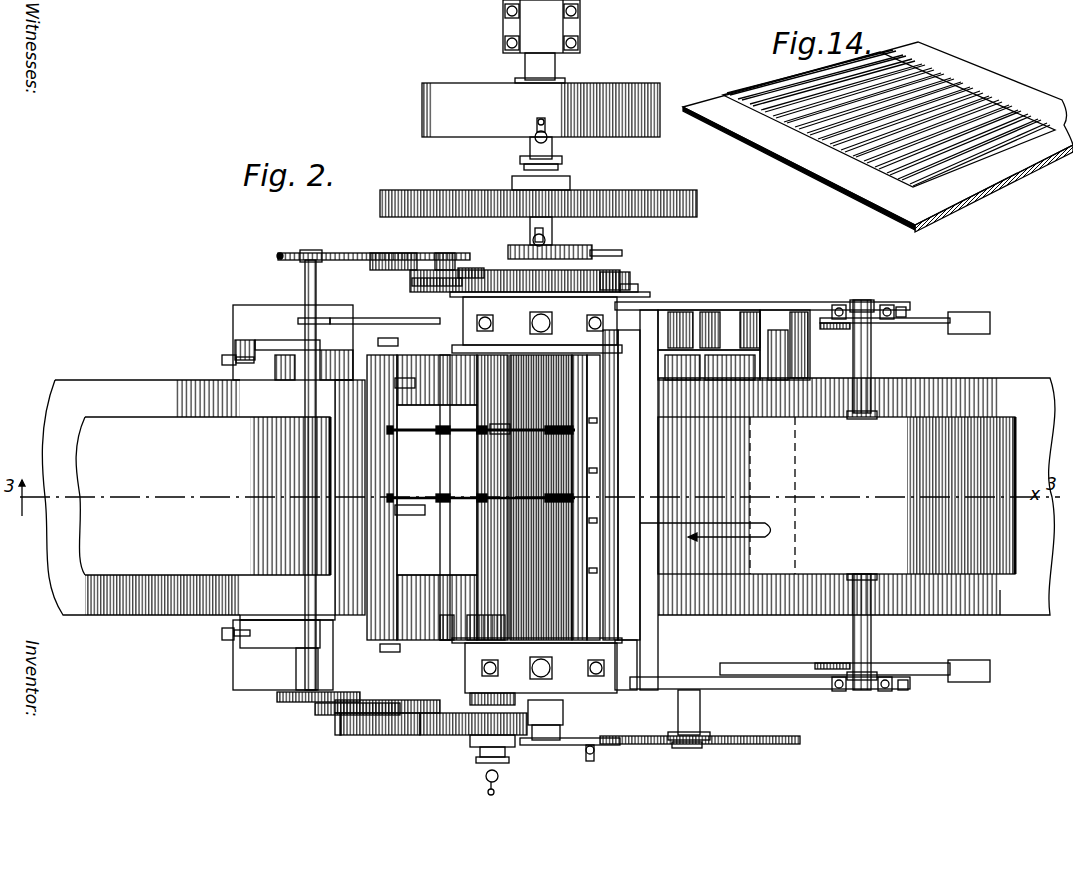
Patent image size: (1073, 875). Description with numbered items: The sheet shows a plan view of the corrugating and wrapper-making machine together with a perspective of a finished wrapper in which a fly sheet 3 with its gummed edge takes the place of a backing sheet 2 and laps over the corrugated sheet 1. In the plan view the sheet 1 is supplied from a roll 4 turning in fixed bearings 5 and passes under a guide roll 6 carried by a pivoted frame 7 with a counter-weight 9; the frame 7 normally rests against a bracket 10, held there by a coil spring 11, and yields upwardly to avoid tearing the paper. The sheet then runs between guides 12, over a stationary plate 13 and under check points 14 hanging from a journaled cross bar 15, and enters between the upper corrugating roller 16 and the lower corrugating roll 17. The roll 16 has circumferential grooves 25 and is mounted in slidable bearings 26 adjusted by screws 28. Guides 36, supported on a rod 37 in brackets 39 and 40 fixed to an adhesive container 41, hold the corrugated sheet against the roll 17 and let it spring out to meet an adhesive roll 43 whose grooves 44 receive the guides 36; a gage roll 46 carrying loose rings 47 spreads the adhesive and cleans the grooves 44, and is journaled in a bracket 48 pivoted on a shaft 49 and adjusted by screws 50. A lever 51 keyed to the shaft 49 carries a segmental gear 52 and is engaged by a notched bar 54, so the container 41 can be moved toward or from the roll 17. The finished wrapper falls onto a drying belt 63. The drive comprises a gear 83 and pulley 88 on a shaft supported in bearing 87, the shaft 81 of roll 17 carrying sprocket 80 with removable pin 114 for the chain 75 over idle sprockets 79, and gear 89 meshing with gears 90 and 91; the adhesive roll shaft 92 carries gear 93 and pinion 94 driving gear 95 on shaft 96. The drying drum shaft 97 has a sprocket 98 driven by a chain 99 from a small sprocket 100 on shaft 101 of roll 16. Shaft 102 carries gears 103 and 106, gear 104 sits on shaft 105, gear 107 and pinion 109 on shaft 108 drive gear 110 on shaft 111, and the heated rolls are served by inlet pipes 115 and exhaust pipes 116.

In FIG. 2, the corrugated sheet 1 is at (709, 533).
In FIG. 14, the corrugated sheet 1 is at (750, 92).
In FIG. 2, the backing sheet 2 is at (203, 496).
In FIG. 2, the fly sheet 3 is at (77, 381).
In FIG. 14, the fly sheet 3 is at (948, 190).
In FIG. 2, the roll 4 is at (856, 496).
In FIG. 2, the fixed bearings 5 is at (868, 306).
In FIG. 2, the guide roll 6 is at (742, 330).
In FIG. 2, the frame 7 is at (806, 320).
In FIG. 2, the counter-weight 9 is at (990, 322).
In FIG. 2, the bracket 10 is at (890, 324).
In FIG. 2, the coil spring 11 is at (838, 330).
In FIG. 2, the guides 12 is at (705, 322).
In FIG. 2, the stationary plate 13 is at (612, 338).
In FIG. 2, the check points 14 is at (650, 322).
In FIG. 2, the cross bar 15 is at (600, 640).
In FIG. 2, the upper corrugating roller 16 is at (540, 546).
In FIG. 2, the lower corrugating roll 17 is at (494, 622).
In FIG. 2, the circumferential grooves 25 is at (588, 590).
In FIG. 2, the bearings 26 is at (660, 300).
In FIG. 2, the screws 28 is at (553, 324).
In FIG. 2, the guides 36 is at (500, 432).
In FIG. 2, the rod 37 is at (510, 382).
In FIG. 2, the bracket 39 is at (540, 323).
In FIG. 2, the bracket 40 is at (478, 643).
In FIG. 2, the adhesive container 41 is at (383, 527).
In FIG. 2, the adhesive roll 43 is at (427, 506).
In FIG. 2, the grooves 44 is at (456, 434).
In FIG. 2, the gage roll 46 is at (400, 514).
In FIG. 2, the loose rings 47 is at (392, 431).
In FIG. 2, the bracket 48 is at (372, 356).
In FIG. 2, the shaft 49 is at (365, 481).
In FIG. 2, the screws 50 is at (385, 338).
In FIG. 2, the lever 51 is at (326, 318).
In FIG. 2, the segmental gear 52 is at (307, 302).
In FIG. 2, the notched bar 54 is at (440, 322).
In FIG. 2, the drying belt 63 is at (1000, 597).
In FIG. 2, the chain 75 is at (330, 253).
In FIG. 2, the idle sprockets 79 is at (282, 253).
In FIG. 2, the sprocket 80 is at (628, 276).
In FIG. 2, the shaft 81 is at (568, 256).
In FIG. 2, the gear 83 is at (685, 204).
In FIG. 2, the bearing 87 is at (548, 31).
In FIG. 2, the pulley 88 is at (458, 102).
In FIG. 2, the gear 89 is at (606, 284).
In FIG. 2, the gear 90 is at (640, 290).
In FIG. 2, the gear 91 is at (470, 276).
In FIG. 2, the shaft 92 is at (446, 628).
In FIG. 2, the gear 93 is at (406, 258).
In FIG. 2, the pinion 94 is at (450, 258).
In FIG. 2, the gear 95 is at (395, 254).
In FIG. 2, the shaft 96 is at (402, 388).
In FIG. 2, the shaft 97 is at (700, 708).
In FIG. 2, the sprocket 98 is at (748, 746).
In FIG. 2, the chain 99 is at (612, 748).
In FIG. 2, the small sprocket 100 is at (563, 748).
In FIG. 2, the shaft 101 is at (541, 745).
In FIG. 2, the shaft 102 is at (402, 714).
In FIG. 2, the gear 103 is at (402, 737).
In FIG. 2, the gear 104 is at (464, 752).
In FIG. 2, the shaft 105 is at (474, 268).
In FIG. 2, the gear 106 is at (458, 737).
In FIG. 2, the gear 107 is at (320, 710).
In FIG. 2, the shaft 108 is at (340, 694).
In FIG. 2, the pinion 109 is at (362, 737).
In FIG. 2, the gear 110 is at (278, 697).
In FIG. 2, the shaft 111 is at (300, 668).
In FIG. 2, the pin 114 is at (594, 252).
In FIG. 2, the inlet pipes 115 is at (555, 145).
In FIG. 2, the exhaust pipes 116 is at (546, 118).